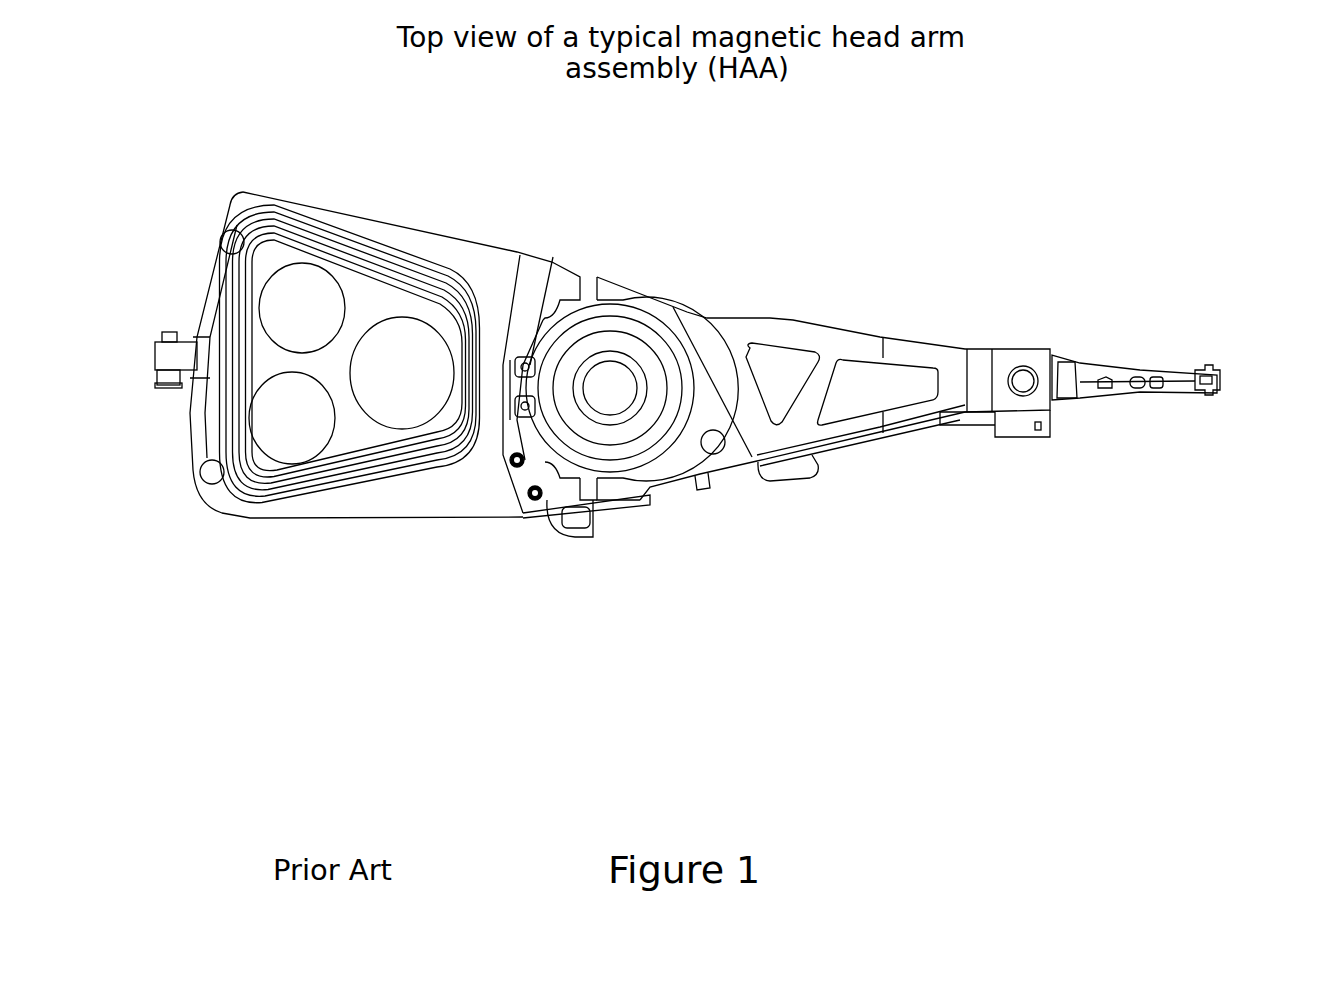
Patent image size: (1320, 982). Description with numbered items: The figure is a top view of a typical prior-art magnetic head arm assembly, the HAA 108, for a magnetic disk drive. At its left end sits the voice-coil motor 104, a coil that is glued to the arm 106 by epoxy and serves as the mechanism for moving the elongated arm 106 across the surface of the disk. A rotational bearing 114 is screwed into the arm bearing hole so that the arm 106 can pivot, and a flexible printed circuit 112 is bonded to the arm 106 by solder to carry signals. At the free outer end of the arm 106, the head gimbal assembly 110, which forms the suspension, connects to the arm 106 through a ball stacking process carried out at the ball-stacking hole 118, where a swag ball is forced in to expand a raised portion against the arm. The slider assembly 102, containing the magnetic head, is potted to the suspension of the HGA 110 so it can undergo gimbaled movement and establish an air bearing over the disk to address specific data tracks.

The slider assembly 102 is at (1212, 398).
The voice-coil motor 104 is at (285, 503).
The arm 106 is at (903, 440).
The head arm assembly (HAA) 108 is at (553, 353).
The head gimbal assembly (HGA) 110 is at (1175, 398).
The flexible printed circuit (FPC) 112 is at (670, 503).
The rotational bearing 114 is at (652, 340).
The ball-stacking hole 118 is at (1015, 372).